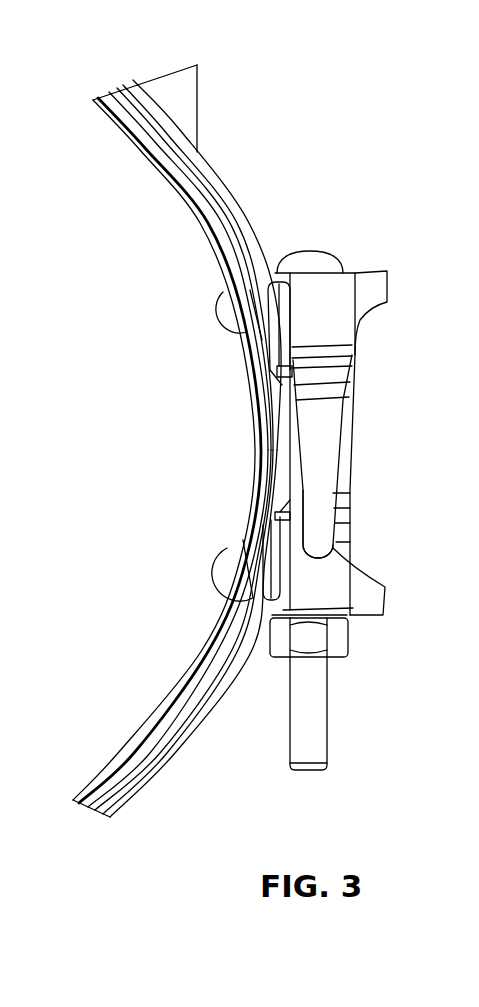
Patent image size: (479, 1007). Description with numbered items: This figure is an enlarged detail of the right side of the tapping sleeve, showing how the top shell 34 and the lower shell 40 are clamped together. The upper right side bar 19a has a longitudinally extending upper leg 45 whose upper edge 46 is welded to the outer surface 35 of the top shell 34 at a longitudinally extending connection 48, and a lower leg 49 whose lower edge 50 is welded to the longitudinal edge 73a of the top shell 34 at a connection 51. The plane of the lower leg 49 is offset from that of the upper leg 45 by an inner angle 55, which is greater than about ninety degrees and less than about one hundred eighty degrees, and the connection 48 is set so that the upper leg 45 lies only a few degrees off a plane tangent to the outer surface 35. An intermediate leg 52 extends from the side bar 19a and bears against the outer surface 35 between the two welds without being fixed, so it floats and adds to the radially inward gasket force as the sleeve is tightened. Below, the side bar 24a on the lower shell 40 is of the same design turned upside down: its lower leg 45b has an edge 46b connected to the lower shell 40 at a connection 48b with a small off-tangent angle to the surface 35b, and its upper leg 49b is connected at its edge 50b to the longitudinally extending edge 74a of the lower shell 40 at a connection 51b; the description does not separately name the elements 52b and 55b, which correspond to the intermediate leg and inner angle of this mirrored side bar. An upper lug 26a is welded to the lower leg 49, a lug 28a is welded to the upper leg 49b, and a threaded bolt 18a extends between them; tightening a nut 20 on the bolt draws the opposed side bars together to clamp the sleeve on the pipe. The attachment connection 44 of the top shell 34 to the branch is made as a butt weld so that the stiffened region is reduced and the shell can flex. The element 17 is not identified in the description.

The band inner edge 17 is at (93, 786).
The threaded bolt 18a is at (300, 727).
The side bar 19a is at (362, 176).
The nut 20 is at (312, 648).
The side bar 24a is at (258, 657).
The upper lug 26a is at (367, 292).
The lug 28a is at (385, 589).
The top shell 34 is at (238, 252).
The outer surface 35 is at (275, 262).
The surface 35b is at (123, 807).
The lower shell 40 is at (198, 467).
The attachment connection 44 is at (197, 152).
The upper leg 45 is at (245, 240).
The lower leg 45b is at (250, 650).
The upper edge 46 is at (240, 205).
The longitudinally extending edge 46b is at (237, 680).
The longitudinally extending connection 48 is at (232, 190).
The longitudinally extending connection 48b is at (230, 697).
The lower leg 49 is at (285, 332).
The upper leg 49b is at (268, 553).
The lower edge 50 is at (297, 363).
The longitudinally extending edge 50b is at (292, 520).
The longitudinally extending connection 51 is at (280, 371).
The longitudinally extending connection 51b is at (287, 513).
The intermediate leg 52 is at (240, 300).
The lower strip 52b is at (255, 594).
The inner angle 55 is at (237, 306).
The lower fastener 55b is at (263, 567).
The longitudinal edge 73a is at (277, 366).
The longitudinally extending edge 74a is at (282, 528).